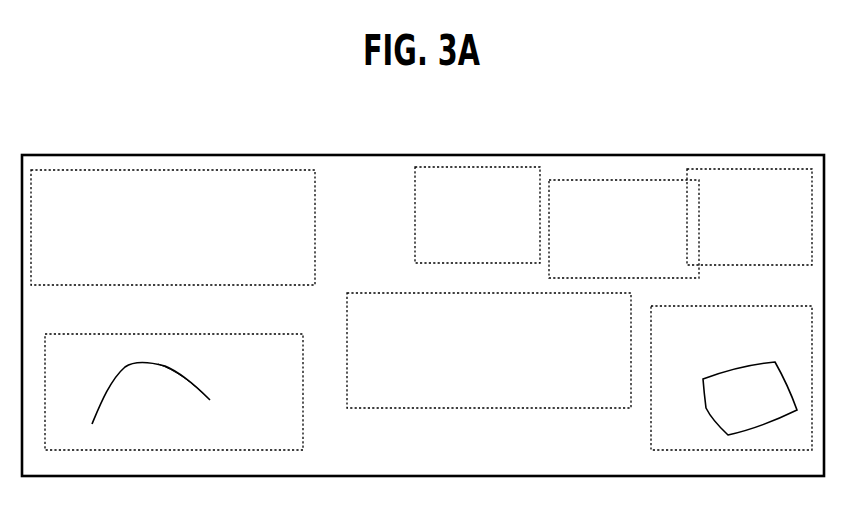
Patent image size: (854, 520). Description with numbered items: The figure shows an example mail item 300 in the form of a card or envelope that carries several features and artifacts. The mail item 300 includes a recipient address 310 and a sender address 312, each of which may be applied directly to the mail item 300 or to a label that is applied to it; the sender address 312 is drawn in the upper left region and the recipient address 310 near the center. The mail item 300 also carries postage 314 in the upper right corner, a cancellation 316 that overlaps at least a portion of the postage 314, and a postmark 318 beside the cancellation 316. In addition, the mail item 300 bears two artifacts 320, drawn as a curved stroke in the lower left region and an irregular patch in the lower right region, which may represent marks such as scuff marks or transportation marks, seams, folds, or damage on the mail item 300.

The mail item 300 is at (122, 136).
The recipient address 310 is at (625, 325).
The sender address 312 is at (310, 203).
The postage 314 is at (803, 257).
The cancellation 316 is at (677, 255).
The postmark 318 is at (537, 255).
The artifacts 320 is at (292, 441).